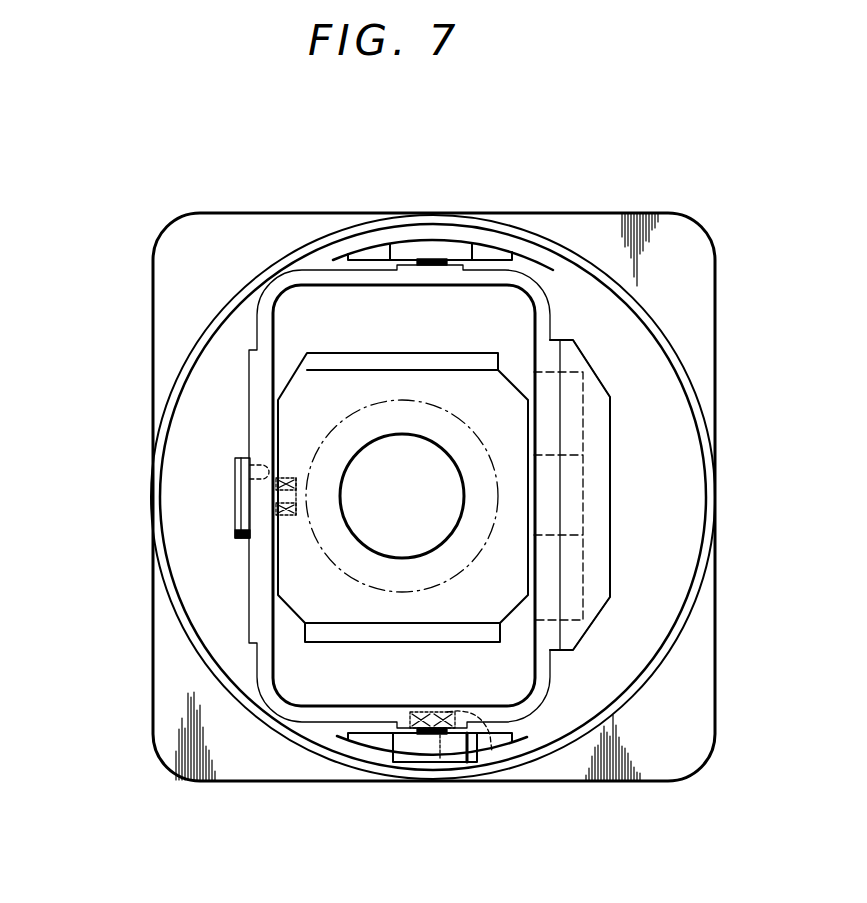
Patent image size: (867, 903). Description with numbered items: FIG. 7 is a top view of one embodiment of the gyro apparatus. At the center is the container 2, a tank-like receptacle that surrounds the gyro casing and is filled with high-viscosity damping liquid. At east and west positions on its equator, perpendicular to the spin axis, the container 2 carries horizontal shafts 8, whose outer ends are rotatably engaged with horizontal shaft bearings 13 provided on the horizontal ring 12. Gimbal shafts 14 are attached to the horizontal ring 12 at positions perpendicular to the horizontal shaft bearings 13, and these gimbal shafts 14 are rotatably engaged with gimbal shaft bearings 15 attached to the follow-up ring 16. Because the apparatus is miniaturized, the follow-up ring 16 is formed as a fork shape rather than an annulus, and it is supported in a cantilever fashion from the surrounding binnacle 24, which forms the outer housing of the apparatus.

The container 2 is at (292, 413).
The horizontal shaft 8 is at (246, 519).
The horizontal ring 12 is at (306, 275).
The horizontal shaft bearing 13 is at (268, 528).
The gimbal shaft 14 is at (450, 760).
The gimbal shaft bearing 15 is at (482, 752).
The follow-up ring 16 is at (449, 252).
The binnacle 24 is at (680, 598).